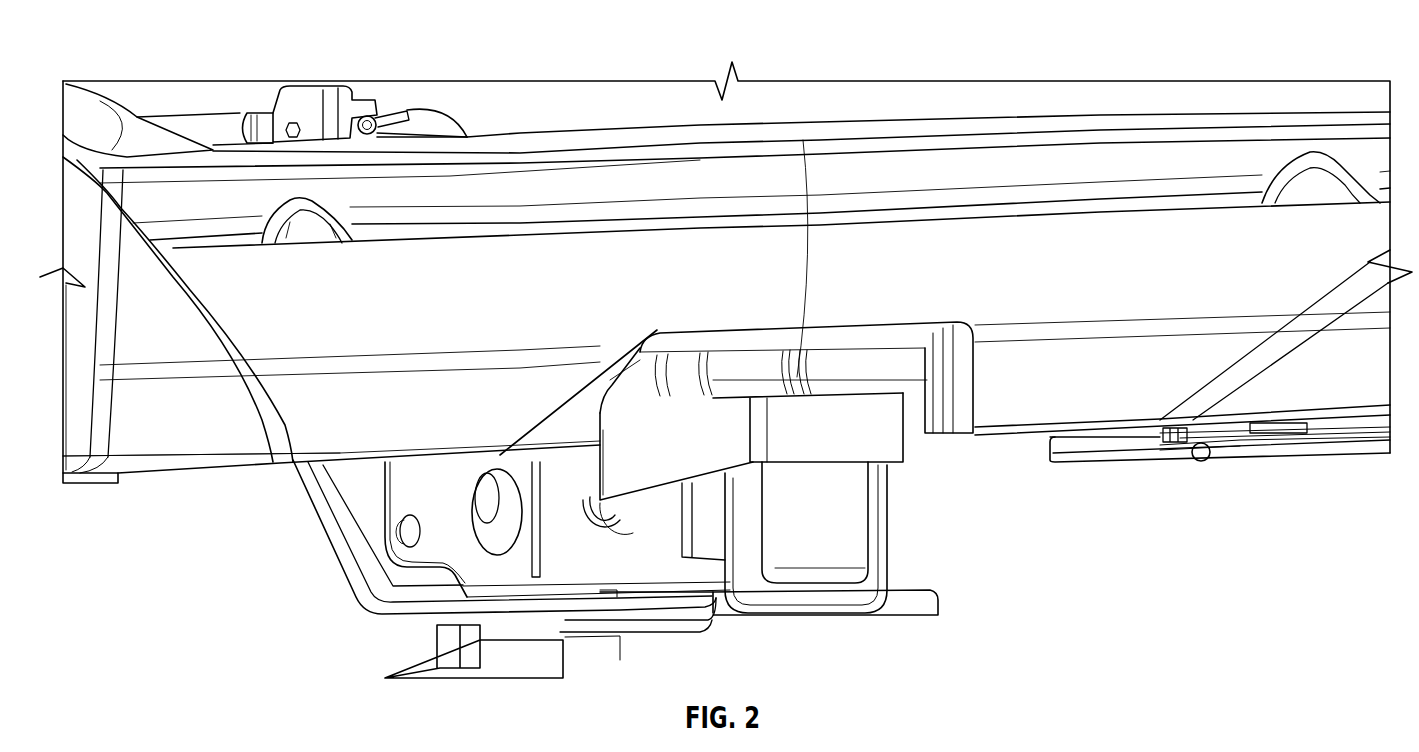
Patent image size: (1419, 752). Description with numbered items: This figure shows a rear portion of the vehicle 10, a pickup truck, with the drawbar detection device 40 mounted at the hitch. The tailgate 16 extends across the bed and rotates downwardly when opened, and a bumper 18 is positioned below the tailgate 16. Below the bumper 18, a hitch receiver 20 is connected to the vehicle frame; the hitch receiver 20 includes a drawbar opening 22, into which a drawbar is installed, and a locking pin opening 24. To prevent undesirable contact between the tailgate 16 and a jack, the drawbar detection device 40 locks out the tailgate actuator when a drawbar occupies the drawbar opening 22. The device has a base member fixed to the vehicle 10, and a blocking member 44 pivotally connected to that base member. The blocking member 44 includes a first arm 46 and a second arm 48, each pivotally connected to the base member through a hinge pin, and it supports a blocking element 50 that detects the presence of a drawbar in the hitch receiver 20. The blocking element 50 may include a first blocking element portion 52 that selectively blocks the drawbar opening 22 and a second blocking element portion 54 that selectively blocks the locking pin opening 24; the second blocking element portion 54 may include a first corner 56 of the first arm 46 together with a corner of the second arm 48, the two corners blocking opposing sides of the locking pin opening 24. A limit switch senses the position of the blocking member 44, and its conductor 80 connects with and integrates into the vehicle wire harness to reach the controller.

The vehicle 10 is at (1154, 469).
The tailgate 16 is at (187, 100).
The bumper 18 is at (207, 445).
The hitch receiver 20 is at (615, 569).
The drawbar opening 22 is at (857, 545).
The locking pin opening 24 is at (623, 527).
The drawbar detection device 40 is at (780, 350).
The blocking member 44 is at (903, 412).
The first arm 46 is at (640, 420).
The second arm 48 is at (797, 377).
The blocking element 50 is at (668, 488).
The first blocking element portion 52 is at (863, 442).
The second blocking element portion 54 is at (599, 435).
The first corner 56 is at (610, 470).
The conductor 80 is at (465, 118).